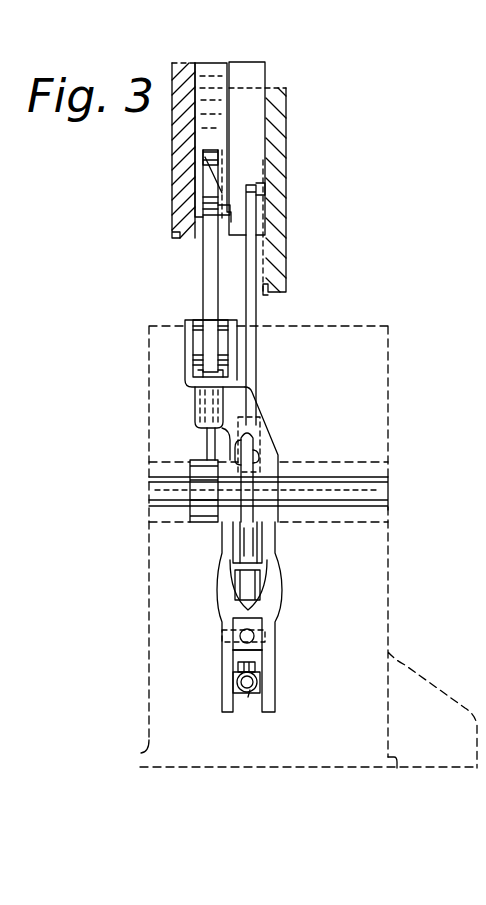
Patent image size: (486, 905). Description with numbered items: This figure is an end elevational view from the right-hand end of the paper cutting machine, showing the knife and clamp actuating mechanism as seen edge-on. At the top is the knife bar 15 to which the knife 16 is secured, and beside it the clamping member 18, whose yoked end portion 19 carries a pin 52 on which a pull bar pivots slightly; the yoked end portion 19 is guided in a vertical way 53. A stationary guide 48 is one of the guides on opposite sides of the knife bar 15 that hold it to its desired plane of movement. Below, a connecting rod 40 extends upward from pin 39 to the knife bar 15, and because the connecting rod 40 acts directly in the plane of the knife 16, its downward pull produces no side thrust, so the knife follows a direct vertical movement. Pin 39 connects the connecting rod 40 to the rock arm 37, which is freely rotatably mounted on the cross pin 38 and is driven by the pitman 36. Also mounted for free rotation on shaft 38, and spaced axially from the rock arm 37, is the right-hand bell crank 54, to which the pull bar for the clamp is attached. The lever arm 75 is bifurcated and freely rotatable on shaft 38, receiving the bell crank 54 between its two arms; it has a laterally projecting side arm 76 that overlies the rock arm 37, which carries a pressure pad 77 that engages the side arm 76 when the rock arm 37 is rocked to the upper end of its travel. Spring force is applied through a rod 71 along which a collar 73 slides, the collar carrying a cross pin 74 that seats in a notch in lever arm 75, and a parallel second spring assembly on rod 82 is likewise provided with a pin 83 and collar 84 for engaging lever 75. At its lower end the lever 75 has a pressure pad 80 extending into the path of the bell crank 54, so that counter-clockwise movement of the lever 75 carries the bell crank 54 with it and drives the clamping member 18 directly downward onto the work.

The knife bar 15 is at (216, 48).
The clamping member 18 is at (265, 69).
The stationary guide 48 is at (185, 161).
The pin 52 is at (268, 193).
The knife 16 is at (205, 216).
The yoked end portion 19 is at (258, 223).
The connecting rod 40 is at (203, 255).
The vertical way 53 is at (268, 295).
The pin 39 is at (190, 355).
The pitman 36 is at (223, 350).
The side arm 76 is at (240, 396).
The pressure pad 77 is at (195, 406).
The rock arm 37 is at (207, 446).
The bell crank 54 is at (255, 456).
The cross pin 38 is at (372, 492).
The lever arm 75 is at (228, 549).
The pressure pad 80 is at (258, 543).
The collar 73 is at (253, 632).
The rod 71 is at (233, 636).
The cross pin 74 is at (266, 637).
The pin 83 is at (233, 682).
The rod 82 is at (262, 682).
The collar 84 is at (255, 693).